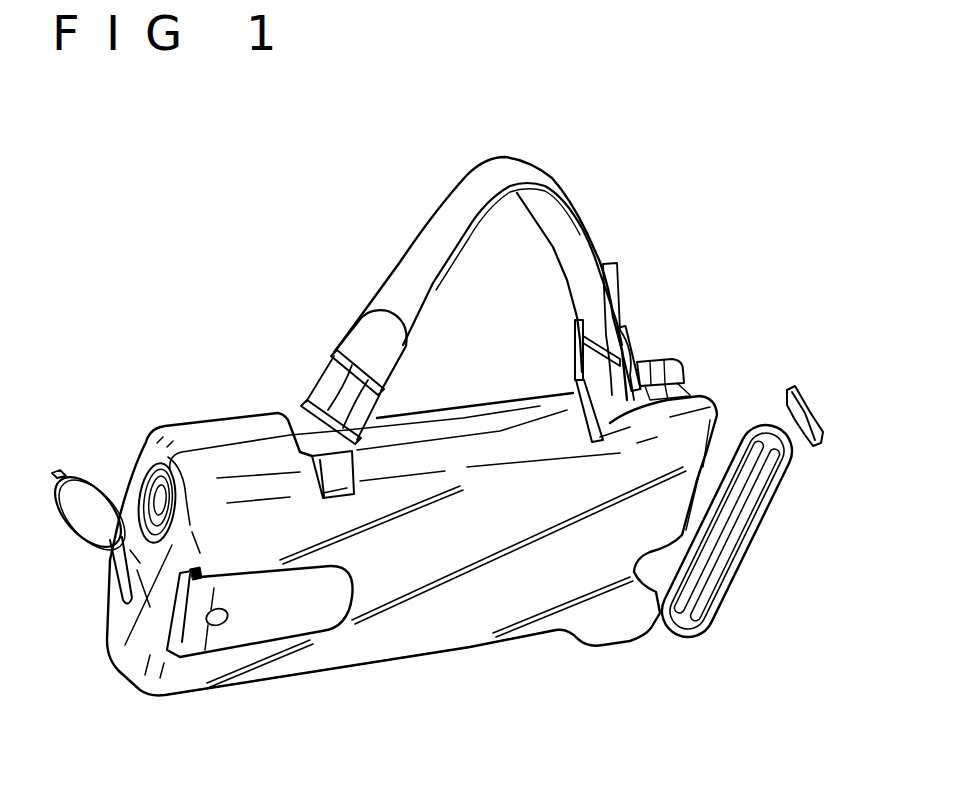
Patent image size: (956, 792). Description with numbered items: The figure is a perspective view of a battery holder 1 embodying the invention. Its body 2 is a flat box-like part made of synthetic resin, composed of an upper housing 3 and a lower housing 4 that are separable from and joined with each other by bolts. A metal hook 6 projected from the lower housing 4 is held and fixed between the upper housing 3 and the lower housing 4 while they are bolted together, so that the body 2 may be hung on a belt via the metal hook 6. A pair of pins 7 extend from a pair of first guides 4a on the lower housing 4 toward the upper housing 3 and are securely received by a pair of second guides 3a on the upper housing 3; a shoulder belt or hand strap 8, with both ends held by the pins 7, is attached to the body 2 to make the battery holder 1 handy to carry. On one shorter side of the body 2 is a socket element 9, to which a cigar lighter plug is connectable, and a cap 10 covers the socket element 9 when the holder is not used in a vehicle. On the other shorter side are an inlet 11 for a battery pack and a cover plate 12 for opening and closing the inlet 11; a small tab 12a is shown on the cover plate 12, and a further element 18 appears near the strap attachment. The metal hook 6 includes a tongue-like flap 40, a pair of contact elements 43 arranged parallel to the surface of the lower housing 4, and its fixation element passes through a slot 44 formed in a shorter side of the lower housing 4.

The battery holder 1 is at (651, 256).
The body 2 is at (237, 412).
The upper housing 3 is at (190, 433).
The second guides 3a is at (291, 420).
The lower housing 4 is at (423, 633).
The first guides 4a is at (350, 465).
The metal hook 6 is at (250, 648).
The pins 7 is at (637, 375).
The shoulder belt or hand strap 8 is at (400, 270).
The socket element 9 is at (133, 477).
The cap 10 is at (77, 527).
The inlet 11 is at (710, 447).
The cover plate 12 is at (777, 513).
The tab 12a is at (807, 403).
The catch 18 is at (677, 360).
The tongue-like flap 40 is at (297, 620).
The contact elements 43 is at (203, 568).
The slot 44 is at (172, 618).